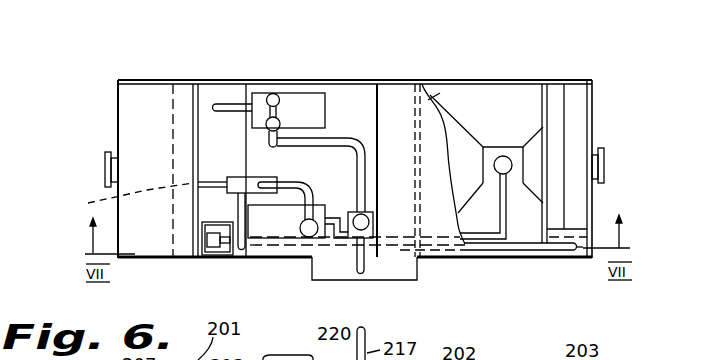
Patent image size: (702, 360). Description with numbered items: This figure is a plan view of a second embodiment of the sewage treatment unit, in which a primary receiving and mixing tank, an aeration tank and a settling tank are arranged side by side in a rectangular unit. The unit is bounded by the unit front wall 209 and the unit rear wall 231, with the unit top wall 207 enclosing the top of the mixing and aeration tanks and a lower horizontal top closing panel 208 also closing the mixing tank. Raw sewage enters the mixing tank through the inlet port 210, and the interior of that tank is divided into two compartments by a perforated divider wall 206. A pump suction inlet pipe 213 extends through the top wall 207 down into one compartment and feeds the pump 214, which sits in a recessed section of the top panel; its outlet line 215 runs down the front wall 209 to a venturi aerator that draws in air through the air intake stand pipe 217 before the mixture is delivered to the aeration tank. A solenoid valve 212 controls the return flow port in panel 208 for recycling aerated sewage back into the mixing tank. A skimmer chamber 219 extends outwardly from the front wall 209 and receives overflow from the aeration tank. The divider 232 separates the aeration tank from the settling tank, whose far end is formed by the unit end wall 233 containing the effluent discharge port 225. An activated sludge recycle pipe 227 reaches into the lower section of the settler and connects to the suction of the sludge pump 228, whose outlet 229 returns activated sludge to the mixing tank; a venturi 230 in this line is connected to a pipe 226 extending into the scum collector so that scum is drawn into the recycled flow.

The perforated divider wall 206 is at (173, 117).
The unit top wall 207 is at (128, 133).
The lower horizontal top closing panel 208 is at (182, 90).
The unit front wall 209 is at (152, 258).
The inlet port 210 is at (105, 165).
The solenoid valve 212 is at (215, 252).
The pump suction inlet pipe 213 is at (221, 112).
The pump 214 is at (302, 98).
The outlet line 215 is at (340, 144).
The air intake stand pipe 217 is at (358, 265).
The skimmer chamber 219 is at (405, 278).
The effluent discharge port 225 is at (604, 165).
The pipe 226 is at (500, 250).
The activated sludge recycle pipe 227 is at (503, 222).
The sludge pump 228 is at (320, 206).
The outlet 229 is at (137, 197).
The venturi 230 is at (240, 179).
The unit rear wall 231 is at (508, 82).
The divider 232 is at (443, 90).
The unit end wall 233 is at (592, 117).